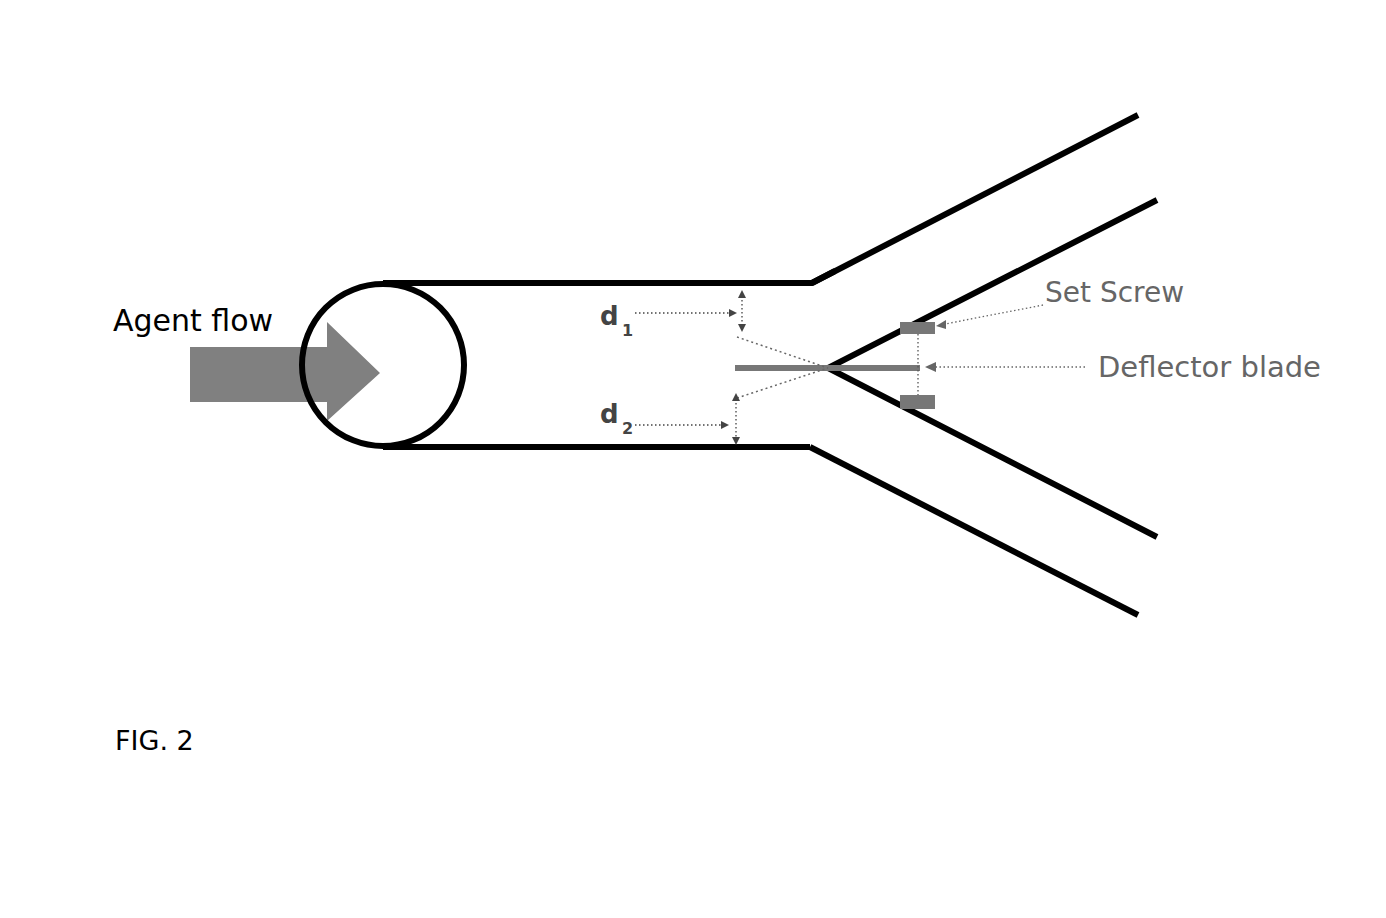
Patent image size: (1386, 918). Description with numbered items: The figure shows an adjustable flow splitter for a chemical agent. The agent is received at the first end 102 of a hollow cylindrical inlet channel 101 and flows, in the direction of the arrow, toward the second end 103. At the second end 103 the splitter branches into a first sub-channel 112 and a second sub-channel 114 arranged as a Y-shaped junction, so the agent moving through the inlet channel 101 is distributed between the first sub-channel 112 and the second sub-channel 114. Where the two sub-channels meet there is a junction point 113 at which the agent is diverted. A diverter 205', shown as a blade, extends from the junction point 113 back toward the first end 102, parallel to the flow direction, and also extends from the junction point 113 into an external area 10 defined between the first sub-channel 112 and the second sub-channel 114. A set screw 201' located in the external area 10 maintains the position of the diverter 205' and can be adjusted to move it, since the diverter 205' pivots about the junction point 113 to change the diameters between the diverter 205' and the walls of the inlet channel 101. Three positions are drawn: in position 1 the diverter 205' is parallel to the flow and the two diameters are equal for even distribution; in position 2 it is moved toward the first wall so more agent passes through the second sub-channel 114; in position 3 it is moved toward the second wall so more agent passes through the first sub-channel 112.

The inlet channel 101 is at (503, 283).
The first end 102 is at (352, 287).
The second end 103 is at (807, 283).
The first sub-channel 112 is at (1038, 163).
The junction point 113 is at (828, 370).
The second sub-channel 114 is at (1013, 555).
The set screw 201' is at (1057, 392).
The diverter 205' is at (821, 454).
The external area 10 is at (1232, 308).
The position 1 is at (736, 370).
The position 2 is at (770, 345).
The position 3 is at (770, 393).